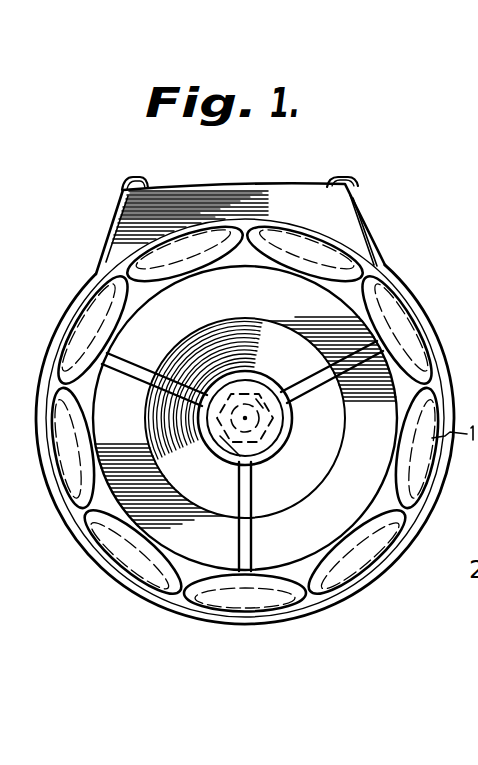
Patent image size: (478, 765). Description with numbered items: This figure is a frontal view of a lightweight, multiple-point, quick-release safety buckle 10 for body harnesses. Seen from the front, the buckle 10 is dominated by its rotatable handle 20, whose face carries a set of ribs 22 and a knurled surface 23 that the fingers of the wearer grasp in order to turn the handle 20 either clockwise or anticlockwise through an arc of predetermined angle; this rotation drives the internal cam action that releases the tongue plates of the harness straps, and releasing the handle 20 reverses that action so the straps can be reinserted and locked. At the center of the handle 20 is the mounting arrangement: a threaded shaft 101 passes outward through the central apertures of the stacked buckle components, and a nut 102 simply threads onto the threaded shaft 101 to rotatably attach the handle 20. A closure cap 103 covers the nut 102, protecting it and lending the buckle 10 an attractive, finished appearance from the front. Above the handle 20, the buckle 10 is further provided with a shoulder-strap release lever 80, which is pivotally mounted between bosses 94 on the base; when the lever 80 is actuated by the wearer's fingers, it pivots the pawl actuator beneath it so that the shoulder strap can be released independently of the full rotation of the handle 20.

The safety buckle 10 is at (294, 164).
The handle 20 is at (170, 525).
The ribs 22 is at (130, 350).
The knurled surface 23 is at (246, 603).
The shoulder-strap release lever 80 is at (178, 192).
The bosses 94 is at (357, 186).
The threaded shaft 101 is at (222, 446).
The nut 102 is at (240, 392).
The closure cap 103 is at (275, 435).